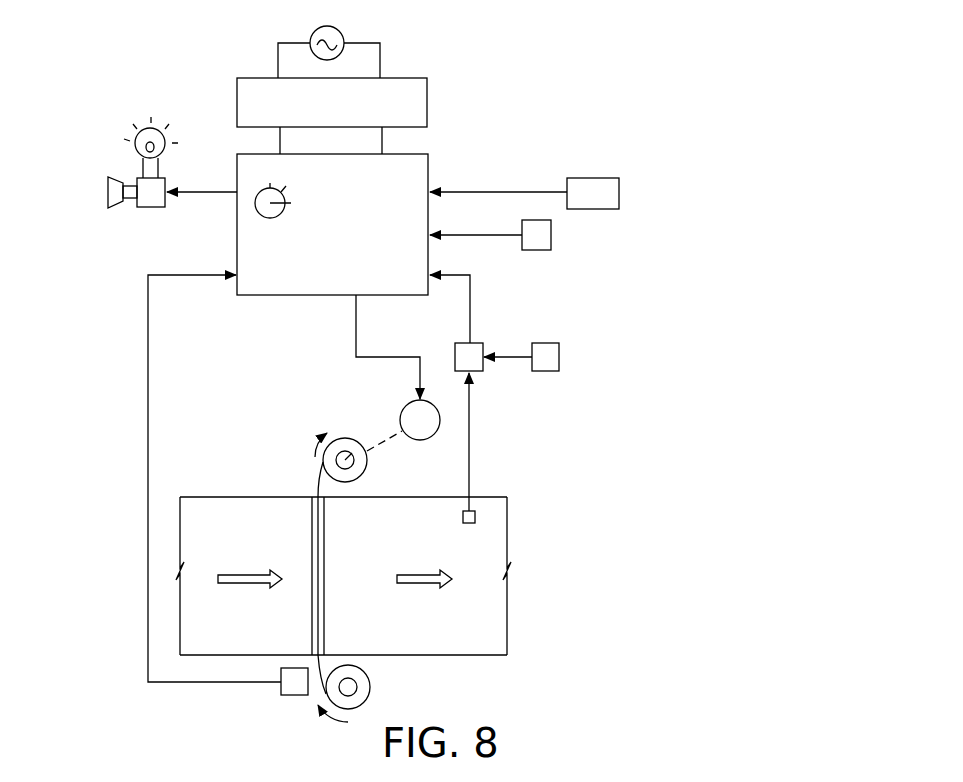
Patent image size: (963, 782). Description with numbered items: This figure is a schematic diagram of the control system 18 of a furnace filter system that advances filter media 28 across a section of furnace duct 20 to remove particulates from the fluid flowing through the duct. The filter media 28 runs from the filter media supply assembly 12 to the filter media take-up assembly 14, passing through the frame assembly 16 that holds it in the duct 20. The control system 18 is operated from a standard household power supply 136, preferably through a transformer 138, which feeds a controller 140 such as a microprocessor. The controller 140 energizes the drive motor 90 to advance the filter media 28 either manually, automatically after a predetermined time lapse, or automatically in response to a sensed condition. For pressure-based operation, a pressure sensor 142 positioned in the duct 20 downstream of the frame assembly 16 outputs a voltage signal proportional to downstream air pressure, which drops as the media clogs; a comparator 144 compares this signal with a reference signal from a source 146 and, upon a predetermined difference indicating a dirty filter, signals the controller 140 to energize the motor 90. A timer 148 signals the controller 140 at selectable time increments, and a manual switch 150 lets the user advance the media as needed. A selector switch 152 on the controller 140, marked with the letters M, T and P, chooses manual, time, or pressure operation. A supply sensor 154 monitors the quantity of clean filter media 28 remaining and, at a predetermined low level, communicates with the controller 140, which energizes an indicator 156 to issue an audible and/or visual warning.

The filter media supply assembly 12 is at (372, 687).
The filter media take-up assembly 14 is at (326, 422).
The frame assembly 16 is at (308, 549).
The control system 18 is at (634, 105).
The furnace duct 20 is at (200, 493).
The filter media 28 is at (313, 521).
The drive motor 90 is at (427, 440).
The household power supply 136 is at (314, 32).
The transformer 138 is at (430, 90).
The controller 140 is at (430, 158).
The pressure sensor 142 is at (475, 517).
The comparator 144 is at (478, 343).
The reference signal source 146 is at (559, 352).
The timer 148 is at (551, 236).
The manual switch 150 is at (619, 192).
The selector switch 152 is at (258, 212).
The supply sensor 154 is at (287, 697).
The indicator 156 is at (115, 165).